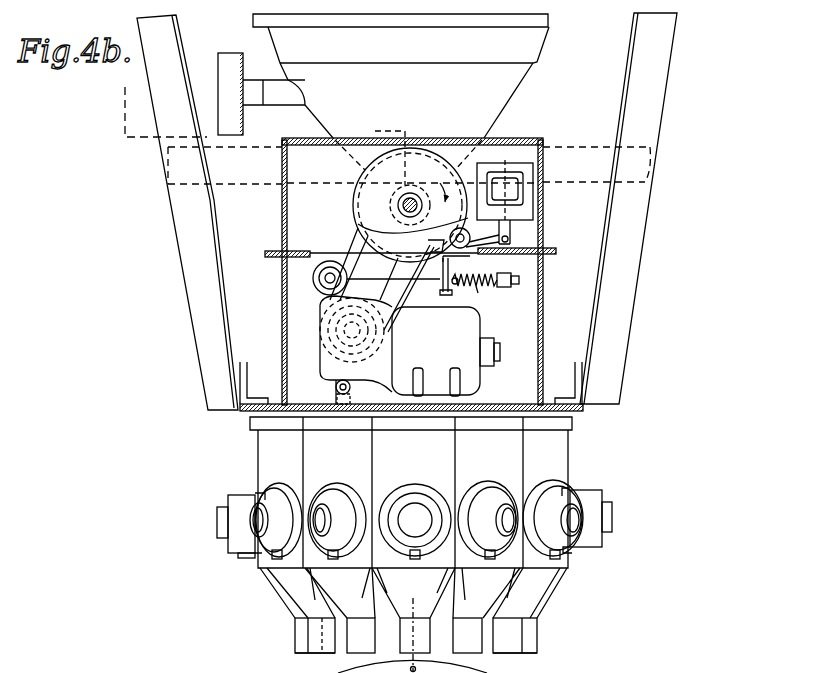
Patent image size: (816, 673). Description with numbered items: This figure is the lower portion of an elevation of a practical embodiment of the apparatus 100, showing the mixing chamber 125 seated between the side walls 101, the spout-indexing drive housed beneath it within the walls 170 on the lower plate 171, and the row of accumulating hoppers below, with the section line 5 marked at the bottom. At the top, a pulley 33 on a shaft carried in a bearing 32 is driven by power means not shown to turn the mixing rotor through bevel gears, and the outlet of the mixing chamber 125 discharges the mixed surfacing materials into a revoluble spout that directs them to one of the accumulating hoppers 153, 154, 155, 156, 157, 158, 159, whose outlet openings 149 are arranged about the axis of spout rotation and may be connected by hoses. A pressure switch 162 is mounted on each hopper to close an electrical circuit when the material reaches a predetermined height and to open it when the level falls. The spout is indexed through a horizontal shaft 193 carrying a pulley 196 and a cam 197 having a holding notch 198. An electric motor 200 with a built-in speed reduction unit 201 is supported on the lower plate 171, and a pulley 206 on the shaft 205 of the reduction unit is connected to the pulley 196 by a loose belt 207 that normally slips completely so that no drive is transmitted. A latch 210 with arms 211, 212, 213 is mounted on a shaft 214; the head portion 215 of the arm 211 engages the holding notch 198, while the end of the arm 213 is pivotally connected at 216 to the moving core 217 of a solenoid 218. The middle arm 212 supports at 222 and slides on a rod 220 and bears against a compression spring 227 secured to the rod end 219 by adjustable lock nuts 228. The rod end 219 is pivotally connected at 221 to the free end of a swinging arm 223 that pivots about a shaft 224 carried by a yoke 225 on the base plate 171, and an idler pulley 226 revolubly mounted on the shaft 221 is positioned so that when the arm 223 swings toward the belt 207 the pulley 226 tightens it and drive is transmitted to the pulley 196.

The section line 5 is at (417, 657).
The bearing 32 is at (268, 80).
The pulley 33 is at (224, 58).
The dispensing machine 100 is at (185, 208).
The side wall 101 is at (187, 240).
The mixing chamber 125 is at (548, 42).
The outlet openings 149 is at (313, 654).
The accumulating hopper 153 is at (542, 598).
The accumulating hopper 154 is at (540, 580).
The accumulating hopper 155 is at (486, 567).
The accumulating hopper 156 is at (413, 568).
The accumulating hopper 157 is at (340, 568).
The accumulating hopper 158 is at (287, 588).
The accumulating hopper 159 is at (290, 608).
The pressure switch 162 is at (250, 478).
The housing wall 170 is at (545, 313).
The lower plate 171 is at (510, 395).
The horizontal shaft 193 is at (397, 205).
The pulley 196 is at (435, 153).
The cam 197 is at (365, 224).
The holding notch 198 is at (445, 245).
The electric motor 200 is at (475, 322).
The speed reduction unit 201 is at (320, 343).
The shaft 205 is at (322, 328).
The pulley 206 is at (333, 313).
The loose belt 207 is at (367, 242).
The latch 210 is at (443, 280).
The arm 211 is at (427, 249).
The middle arm 212 is at (456, 263).
The arm 213 is at (470, 234).
The shaft 214 is at (410, 260).
The head portion 215 is at (412, 293).
The pivotal connection 216 is at (511, 240).
The moving core 217 is at (510, 230).
The solenoid 218 is at (530, 193).
The end of rod 219 is at (514, 281).
The rod 220 is at (360, 280).
The shaft 221 is at (320, 279).
The support 222 is at (457, 283).
The swinging arm 223 is at (322, 298).
The shaft 224 is at (335, 385).
The yoke 225 is at (338, 396).
The idler pulley 226 is at (315, 273).
The compression spring 227 is at (481, 290).
The adjustable lock nuts 228 is at (514, 290).